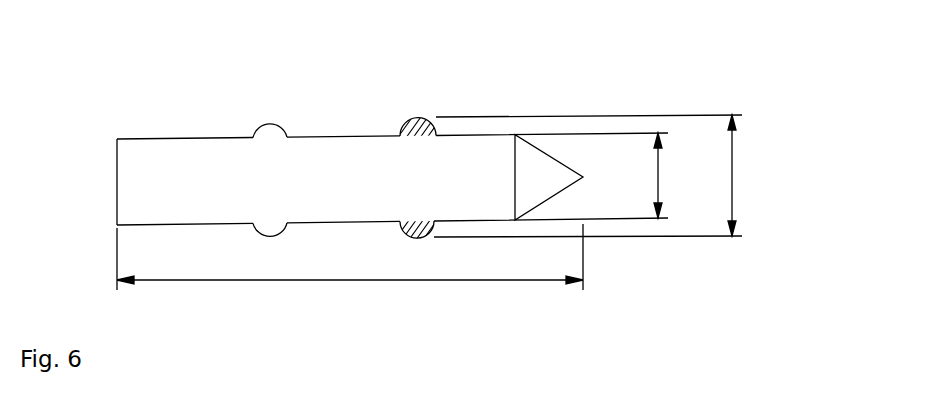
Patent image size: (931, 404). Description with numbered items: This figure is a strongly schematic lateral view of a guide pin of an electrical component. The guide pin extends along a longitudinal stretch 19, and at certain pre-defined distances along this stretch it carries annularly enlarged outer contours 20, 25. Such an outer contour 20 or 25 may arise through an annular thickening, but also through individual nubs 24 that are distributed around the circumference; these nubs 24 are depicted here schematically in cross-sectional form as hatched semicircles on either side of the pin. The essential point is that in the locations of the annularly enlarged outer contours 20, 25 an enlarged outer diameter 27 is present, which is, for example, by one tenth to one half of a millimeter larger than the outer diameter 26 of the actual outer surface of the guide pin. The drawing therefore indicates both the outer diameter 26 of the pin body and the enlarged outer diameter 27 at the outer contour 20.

The longitudinal stretch 19 is at (350, 257).
The annular outer contour 20 is at (427, 112).
The nub 24 is at (404, 118).
The annular outer contour 25 is at (258, 122).
The outer diameter 26 is at (646, 175).
The enlarged outer diameter 27 is at (720, 175).